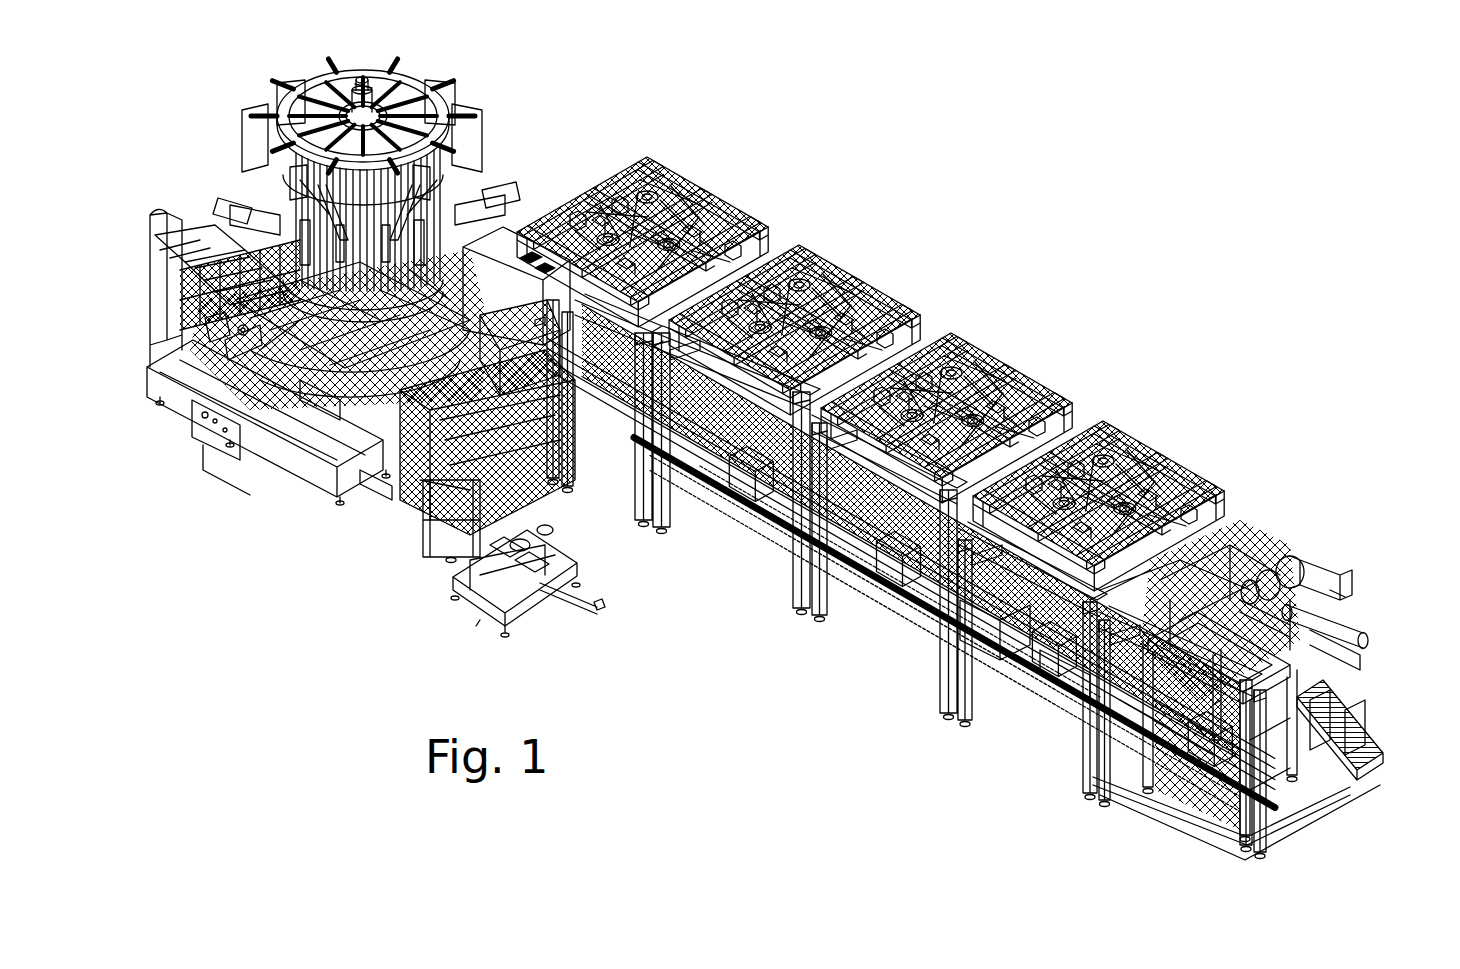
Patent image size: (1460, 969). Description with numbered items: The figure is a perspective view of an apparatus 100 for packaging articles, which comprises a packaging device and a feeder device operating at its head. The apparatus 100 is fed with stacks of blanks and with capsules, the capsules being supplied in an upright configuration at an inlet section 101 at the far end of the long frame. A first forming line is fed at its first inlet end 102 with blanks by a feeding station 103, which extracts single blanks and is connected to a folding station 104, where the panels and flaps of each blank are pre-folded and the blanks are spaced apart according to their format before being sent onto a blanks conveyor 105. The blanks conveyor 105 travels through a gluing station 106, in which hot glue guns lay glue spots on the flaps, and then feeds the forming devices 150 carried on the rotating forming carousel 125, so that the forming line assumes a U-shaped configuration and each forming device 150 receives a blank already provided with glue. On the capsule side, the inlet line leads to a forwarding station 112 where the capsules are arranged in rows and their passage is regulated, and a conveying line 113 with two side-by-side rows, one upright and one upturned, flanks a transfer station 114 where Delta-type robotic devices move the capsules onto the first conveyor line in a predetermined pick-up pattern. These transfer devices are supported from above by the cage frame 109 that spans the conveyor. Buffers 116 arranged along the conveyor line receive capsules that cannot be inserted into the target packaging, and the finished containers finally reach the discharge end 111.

The apparatus for packaging articles 100 is at (1066, 244).
The inlet section 101 is at (1270, 775).
The first inlet end 102 is at (433, 518).
The feeding station 103 is at (378, 490).
The folding station 104 is at (330, 420).
The blanks conveyor 105 is at (240, 322).
The gluing station 106 is at (195, 240).
The cage frame 109 is at (797, 540).
The discharge end 111 is at (1348, 712).
The forwarding station 112 is at (1180, 790).
The conveying line 113 is at (1065, 693).
The transfer station 114 is at (1018, 700).
The buffers 116 is at (867, 553).
The rotating forming carousel 125 is at (452, 92).
The forming devices 150 is at (327, 245).